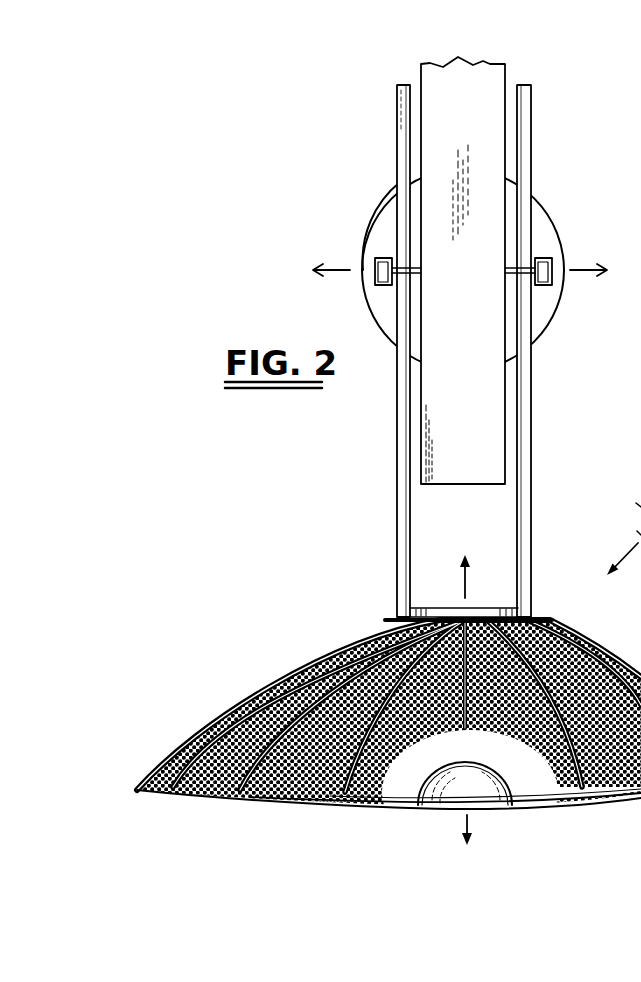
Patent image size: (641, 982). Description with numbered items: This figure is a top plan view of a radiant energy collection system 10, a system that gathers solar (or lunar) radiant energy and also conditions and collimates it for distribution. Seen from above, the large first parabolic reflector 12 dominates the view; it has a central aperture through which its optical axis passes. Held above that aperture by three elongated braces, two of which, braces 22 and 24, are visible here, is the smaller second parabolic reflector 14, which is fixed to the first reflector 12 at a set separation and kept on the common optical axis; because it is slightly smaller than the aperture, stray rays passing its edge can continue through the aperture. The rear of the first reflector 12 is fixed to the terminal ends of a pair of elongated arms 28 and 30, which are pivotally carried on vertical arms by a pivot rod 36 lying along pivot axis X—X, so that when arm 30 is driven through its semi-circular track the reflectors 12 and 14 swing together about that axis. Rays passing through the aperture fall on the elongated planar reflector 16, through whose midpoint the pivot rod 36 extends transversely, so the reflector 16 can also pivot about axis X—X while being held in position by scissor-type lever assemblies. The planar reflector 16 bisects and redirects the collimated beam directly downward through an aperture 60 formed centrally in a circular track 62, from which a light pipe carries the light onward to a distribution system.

The radiant energy collection system 10 is at (362, 486).
The first parabolic reflector 12 is at (358, 628).
The second parabolic reflector 14 is at (490, 797).
The planar reflector 16 is at (490, 417).
The elongated brace 22 is at (370, 805).
The elongated brace 24 is at (247, 798).
The elongated arm 28 is at (403, 548).
The elongated arm 30 is at (526, 522).
The pivot rod 36 is at (406, 268).
The aperture 60 is at (518, 236).
The circular track 62 is at (395, 207).